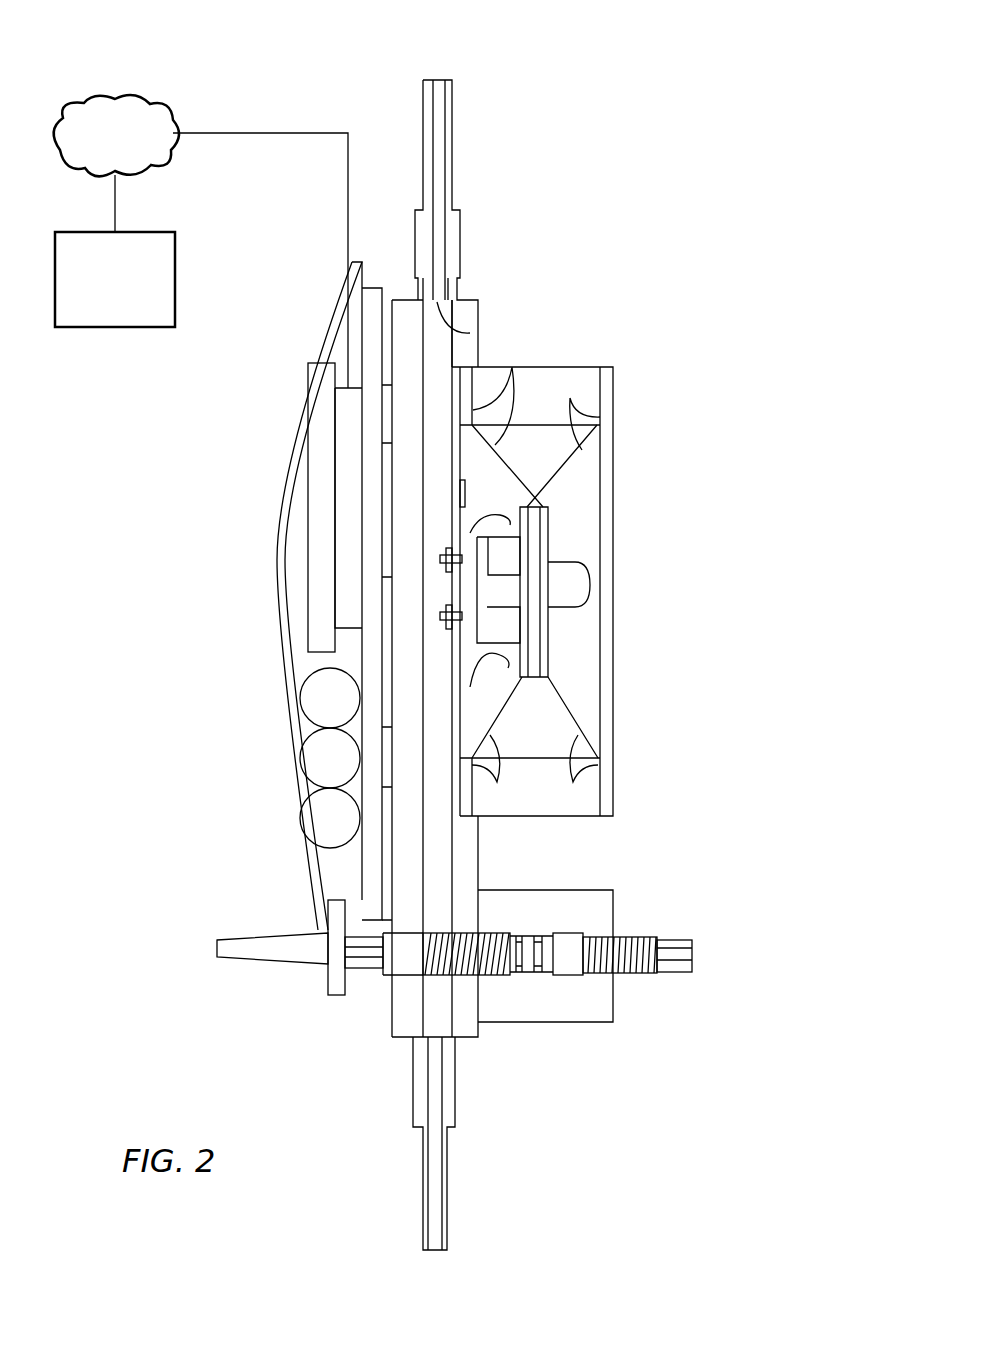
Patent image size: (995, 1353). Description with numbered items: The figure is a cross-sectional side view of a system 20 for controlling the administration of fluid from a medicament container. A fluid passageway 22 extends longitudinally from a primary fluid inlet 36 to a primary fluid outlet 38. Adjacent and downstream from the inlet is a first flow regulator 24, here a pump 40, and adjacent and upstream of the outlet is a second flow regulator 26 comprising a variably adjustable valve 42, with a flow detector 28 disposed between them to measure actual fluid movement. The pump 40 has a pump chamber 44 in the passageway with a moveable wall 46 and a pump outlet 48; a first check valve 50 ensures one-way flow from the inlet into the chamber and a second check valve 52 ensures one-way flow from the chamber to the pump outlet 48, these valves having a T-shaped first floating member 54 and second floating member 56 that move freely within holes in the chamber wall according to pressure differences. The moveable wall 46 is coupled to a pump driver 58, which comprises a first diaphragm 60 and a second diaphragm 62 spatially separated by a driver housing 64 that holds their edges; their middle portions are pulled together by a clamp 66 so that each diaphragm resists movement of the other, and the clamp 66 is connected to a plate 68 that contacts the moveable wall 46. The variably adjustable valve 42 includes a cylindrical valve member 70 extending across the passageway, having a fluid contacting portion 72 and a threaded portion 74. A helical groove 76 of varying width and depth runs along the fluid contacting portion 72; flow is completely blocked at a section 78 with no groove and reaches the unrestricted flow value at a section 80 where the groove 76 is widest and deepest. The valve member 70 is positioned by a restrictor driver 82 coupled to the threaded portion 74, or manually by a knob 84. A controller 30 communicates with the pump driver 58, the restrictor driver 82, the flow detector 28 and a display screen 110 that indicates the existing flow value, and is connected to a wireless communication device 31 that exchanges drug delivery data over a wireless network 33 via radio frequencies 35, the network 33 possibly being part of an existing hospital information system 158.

The system 20 is at (788, 63).
The fluid passageway 22 is at (425, 402).
The first flow regulator 24 is at (752, 290).
The pump 40 is at (641, 495).
The second flow regulator 26 is at (700, 909).
The variably adjustable valve 42 is at (609, 959).
The flow detector 28 is at (417, 830).
The controller 30 is at (360, 495).
The wireless communication device 31 is at (333, 422).
The wireless network 33 is at (348, 190).
The radio frequencies 35 is at (110, 100).
The primary fluid inlet 36 is at (478, 345).
The primary fluid outlet 38 is at (434, 1024).
The pump chamber 44 is at (472, 512).
The moveable wall 46 is at (550, 518).
The pump outlet 48 is at (437, 652).
The first check valve 50 is at (450, 553).
The second check valve 52 is at (448, 604).
The first floating member 54 is at (440, 556).
The second floating member 56 is at (440, 620).
The pump driver 58 is at (572, 318).
The first diaphragm 60 is at (512, 367).
The second diaphragm 62 is at (580, 592).
The driver housing 64 is at (572, 367).
The clamp 66 is at (552, 522).
The plate 68 is at (490, 558).
The cylindrical valve member 70 is at (583, 940).
The fluid contacting portion 72 is at (423, 978).
The threaded portion 74 is at (583, 978).
The groove 76 is at (517, 935).
The section having no groove 78 is at (410, 925).
The section of maximum groove 80 is at (548, 935).
The restrictor driver 82 is at (550, 1022).
The knob 84 is at (272, 960).
The display screen 110 is at (308, 568).
The hospital information system 158 is at (115, 327).